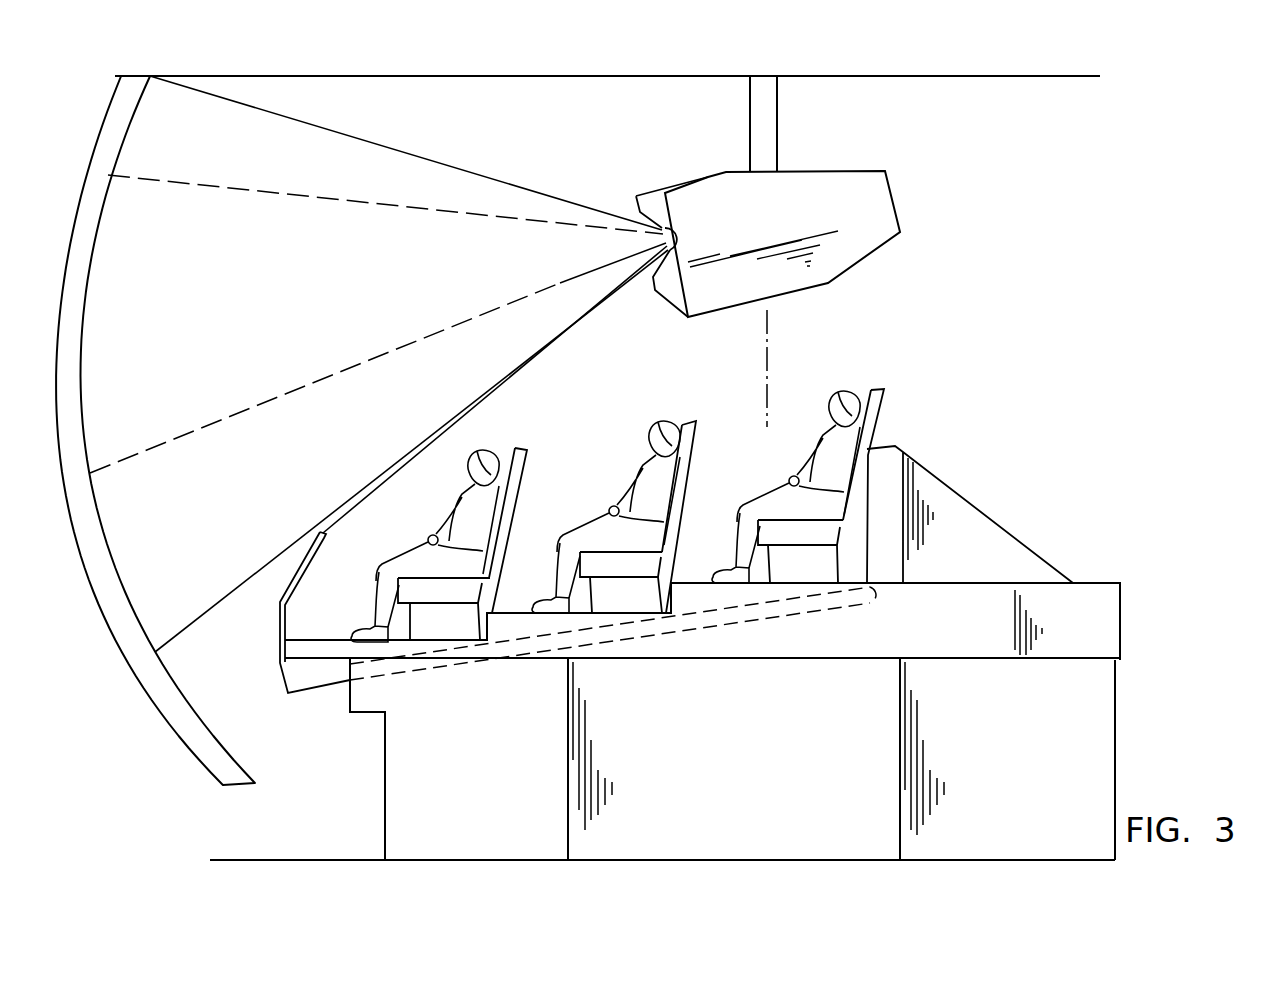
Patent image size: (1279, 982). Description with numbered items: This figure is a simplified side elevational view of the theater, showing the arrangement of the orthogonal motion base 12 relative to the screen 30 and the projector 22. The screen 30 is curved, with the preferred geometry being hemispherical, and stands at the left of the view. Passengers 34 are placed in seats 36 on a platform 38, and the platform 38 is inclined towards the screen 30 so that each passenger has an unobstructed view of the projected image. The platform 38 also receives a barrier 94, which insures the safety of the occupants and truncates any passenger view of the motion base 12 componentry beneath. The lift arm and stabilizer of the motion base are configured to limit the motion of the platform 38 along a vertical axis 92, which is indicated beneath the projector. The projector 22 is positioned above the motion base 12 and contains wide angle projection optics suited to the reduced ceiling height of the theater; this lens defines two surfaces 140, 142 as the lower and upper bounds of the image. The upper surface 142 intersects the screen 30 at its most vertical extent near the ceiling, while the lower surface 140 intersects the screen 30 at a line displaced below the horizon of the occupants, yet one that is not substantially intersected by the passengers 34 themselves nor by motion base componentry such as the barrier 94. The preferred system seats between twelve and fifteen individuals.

The orthogonal motion base 12 is at (978, 475).
The projector 22 is at (800, 170).
The screen 30 is at (134, 84).
The passengers 34 is at (487, 457).
The seats 36 is at (520, 473).
The platform 38 is at (872, 611).
The vertical axis 92 is at (769, 352).
The barrier 94 is at (279, 626).
The lower surface 140 is at (560, 333).
The upper surface 142 is at (455, 166).